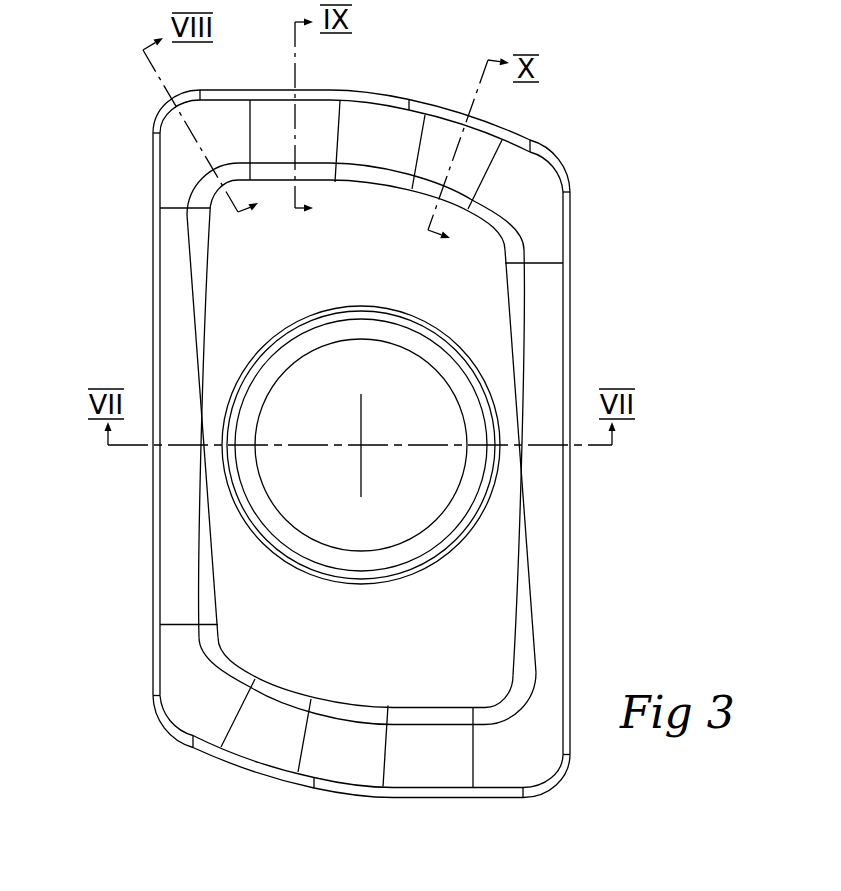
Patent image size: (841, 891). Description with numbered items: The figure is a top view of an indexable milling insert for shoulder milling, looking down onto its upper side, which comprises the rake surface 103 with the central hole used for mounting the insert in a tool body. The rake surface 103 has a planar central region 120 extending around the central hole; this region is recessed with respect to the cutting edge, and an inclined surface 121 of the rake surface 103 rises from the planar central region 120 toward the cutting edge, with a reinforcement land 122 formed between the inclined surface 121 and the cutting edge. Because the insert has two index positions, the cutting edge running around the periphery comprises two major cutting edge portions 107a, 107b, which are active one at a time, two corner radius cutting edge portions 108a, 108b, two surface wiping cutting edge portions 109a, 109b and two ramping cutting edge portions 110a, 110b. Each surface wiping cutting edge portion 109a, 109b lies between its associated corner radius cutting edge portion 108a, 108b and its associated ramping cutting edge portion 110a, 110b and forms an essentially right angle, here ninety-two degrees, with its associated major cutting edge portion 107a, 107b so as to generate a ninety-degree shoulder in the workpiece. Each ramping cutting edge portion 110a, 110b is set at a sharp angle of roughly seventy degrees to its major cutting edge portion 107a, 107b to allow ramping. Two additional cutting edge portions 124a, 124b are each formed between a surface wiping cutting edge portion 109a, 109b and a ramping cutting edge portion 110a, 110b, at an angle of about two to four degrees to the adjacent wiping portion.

The rake surface 103 is at (370, 651).
The major cutting edge portion 107a is at (152, 294).
The major cutting edge portion 107b is at (571, 316).
The corner radius cutting edge portion 108a is at (172, 103).
The corner radius cutting edge portion 108b is at (552, 787).
The surface wiping cutting edge portion 109a is at (277, 88).
The surface wiping cutting edge portion 109b is at (457, 800).
The ramping cutting edge portion 110a is at (493, 128).
The ramping cutting edge portion 110b is at (243, 770).
The planar central region 120 is at (477, 268).
The inclined surface 121 is at (180, 152).
The reinforcement land 122 is at (153, 191).
The additional cutting edge portion 124a is at (317, 90).
The additional cutting edge portion 124b is at (397, 802).